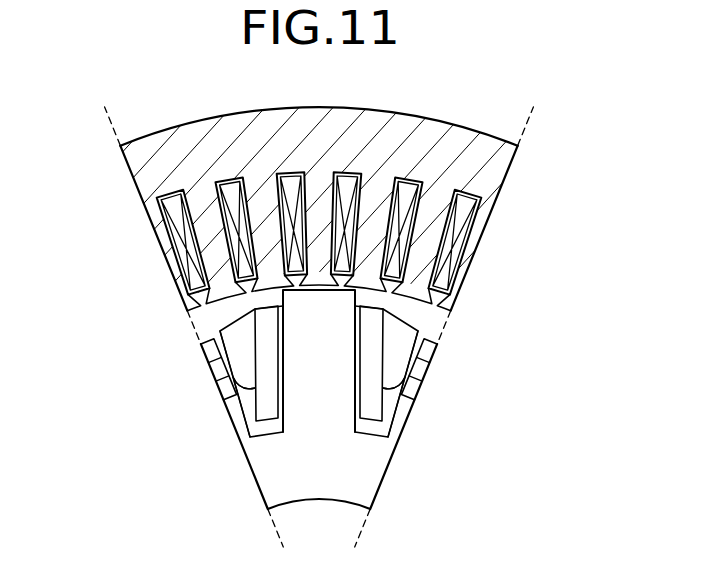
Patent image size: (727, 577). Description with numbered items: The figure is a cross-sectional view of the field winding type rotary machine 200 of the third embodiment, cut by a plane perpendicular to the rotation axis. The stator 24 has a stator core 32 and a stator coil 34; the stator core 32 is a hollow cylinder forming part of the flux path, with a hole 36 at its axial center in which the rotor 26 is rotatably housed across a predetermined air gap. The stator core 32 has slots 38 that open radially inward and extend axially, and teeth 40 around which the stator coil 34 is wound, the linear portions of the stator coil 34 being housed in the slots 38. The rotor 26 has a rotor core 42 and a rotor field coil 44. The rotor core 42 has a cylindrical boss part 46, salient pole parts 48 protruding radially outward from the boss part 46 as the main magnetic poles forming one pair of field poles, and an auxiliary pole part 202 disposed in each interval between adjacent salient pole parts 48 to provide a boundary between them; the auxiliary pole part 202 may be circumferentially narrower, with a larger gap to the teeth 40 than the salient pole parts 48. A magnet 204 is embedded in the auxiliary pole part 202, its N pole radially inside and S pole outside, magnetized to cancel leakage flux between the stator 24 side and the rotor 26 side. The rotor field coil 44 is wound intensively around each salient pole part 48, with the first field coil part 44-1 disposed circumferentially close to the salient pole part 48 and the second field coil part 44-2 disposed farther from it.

The rotary machine 200 is at (393, 101).
The stator 24 is at (518, 178).
The rotor 26 is at (246, 482).
The stator core 32 is at (170, 168).
The stator coil 34 is at (453, 223).
The hole 36 is at (412, 300).
The slots 38 is at (197, 267).
The teeth 40 is at (197, 203).
The rotor core 42 is at (548, 418).
The rotor field coil 44 is at (80, 372).
The first field coil part 44-1 is at (265, 400).
The second field coil part 44-2 is at (235, 342).
The boss part 46 is at (347, 473).
The salient pole parts 48 is at (325, 375).
The auxiliary pole part 202 is at (423, 347).
The magnet 204 is at (418, 374).